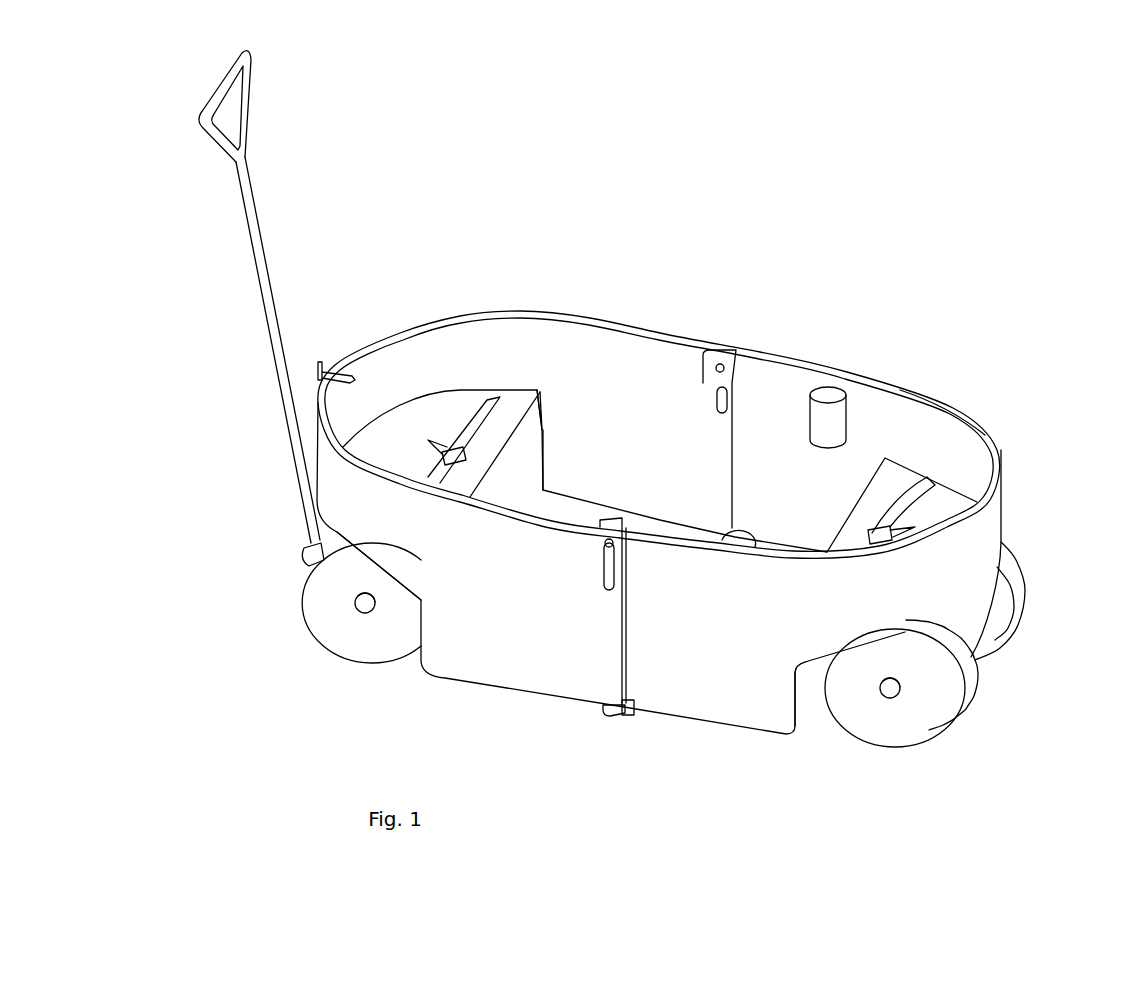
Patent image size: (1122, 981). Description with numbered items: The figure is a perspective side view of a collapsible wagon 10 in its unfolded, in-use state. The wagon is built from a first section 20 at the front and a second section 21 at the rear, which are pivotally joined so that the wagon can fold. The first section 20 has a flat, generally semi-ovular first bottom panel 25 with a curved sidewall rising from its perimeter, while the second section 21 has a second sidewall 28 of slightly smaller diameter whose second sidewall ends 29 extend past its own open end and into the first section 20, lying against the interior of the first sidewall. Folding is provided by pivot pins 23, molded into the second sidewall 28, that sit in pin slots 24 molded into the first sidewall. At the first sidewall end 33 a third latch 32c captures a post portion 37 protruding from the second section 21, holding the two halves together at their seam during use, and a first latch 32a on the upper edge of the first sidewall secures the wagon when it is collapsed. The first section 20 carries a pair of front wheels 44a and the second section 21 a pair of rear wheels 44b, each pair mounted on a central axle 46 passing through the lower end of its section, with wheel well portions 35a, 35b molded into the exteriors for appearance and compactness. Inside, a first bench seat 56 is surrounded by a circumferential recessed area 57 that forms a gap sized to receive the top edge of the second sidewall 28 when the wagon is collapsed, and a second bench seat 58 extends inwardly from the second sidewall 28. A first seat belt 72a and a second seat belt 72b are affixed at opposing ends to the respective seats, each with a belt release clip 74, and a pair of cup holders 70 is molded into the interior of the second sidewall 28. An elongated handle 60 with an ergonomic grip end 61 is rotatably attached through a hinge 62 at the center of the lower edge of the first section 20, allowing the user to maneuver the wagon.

The collapsible wagon 10 is at (1018, 153).
The first section 20 is at (396, 696).
The second section 21 is at (690, 738).
The pivot pin 23 is at (605, 544).
The pin slot 24 is at (605, 580).
The first bottom panel 25 is at (542, 430).
The second sidewall 28 is at (945, 410).
The second sidewall end 29 is at (613, 520).
The first latch 32a is at (330, 370).
The third latch 32c is at (605, 712).
The first sidewall end 33 is at (622, 640).
The wheel well portion 35a is at (397, 580).
The wheel well portion 35b is at (800, 693).
The post portion 37 is at (628, 713).
The front wheels 44a is at (327, 598).
The rear wheels 44b is at (1016, 588).
The central axle 46 is at (360, 614).
The first bench seat 56 is at (527, 427).
The recessed area 57 is at (378, 397).
The second bench seat 58 is at (903, 475).
The handle 60 is at (266, 250).
The grip end 61 is at (245, 120).
The hinge 62 is at (308, 547).
The cup holder 70 is at (830, 393).
The first seat belt 72a is at (487, 405).
The second seat belt 72b is at (898, 495).
The belt release clip 74 is at (440, 447).